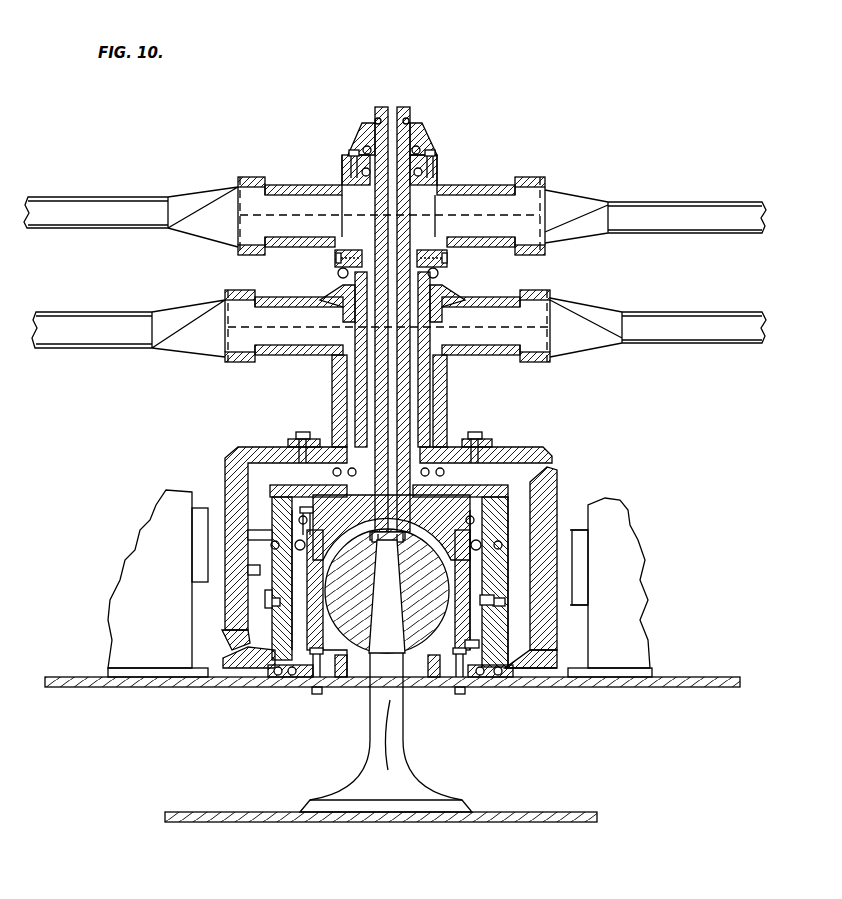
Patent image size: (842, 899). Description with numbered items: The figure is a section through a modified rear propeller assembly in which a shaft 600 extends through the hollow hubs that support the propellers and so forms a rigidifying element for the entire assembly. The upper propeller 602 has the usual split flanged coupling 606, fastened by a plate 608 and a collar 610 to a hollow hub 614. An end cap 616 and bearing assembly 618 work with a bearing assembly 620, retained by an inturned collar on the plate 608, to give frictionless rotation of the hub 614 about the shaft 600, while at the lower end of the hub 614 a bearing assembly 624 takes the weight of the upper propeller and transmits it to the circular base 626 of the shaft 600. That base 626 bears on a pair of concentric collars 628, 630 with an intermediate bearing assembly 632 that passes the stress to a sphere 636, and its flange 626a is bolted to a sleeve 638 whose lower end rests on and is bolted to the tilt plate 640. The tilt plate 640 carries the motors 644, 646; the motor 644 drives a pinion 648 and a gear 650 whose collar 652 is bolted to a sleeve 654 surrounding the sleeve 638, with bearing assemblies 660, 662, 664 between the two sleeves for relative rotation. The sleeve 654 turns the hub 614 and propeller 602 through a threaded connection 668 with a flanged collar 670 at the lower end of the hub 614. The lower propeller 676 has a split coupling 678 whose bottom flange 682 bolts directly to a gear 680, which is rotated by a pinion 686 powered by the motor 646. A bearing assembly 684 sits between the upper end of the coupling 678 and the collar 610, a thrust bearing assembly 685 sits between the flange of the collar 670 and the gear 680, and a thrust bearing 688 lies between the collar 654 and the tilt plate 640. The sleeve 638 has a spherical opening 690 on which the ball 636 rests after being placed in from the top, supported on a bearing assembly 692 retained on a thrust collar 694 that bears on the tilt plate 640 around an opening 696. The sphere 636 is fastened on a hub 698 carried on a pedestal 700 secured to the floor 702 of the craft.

The shaft 600 is at (402, 107).
The upper propeller 602 is at (566, 176).
The split flanged coupling 606 is at (500, 158).
The plate 608 is at (440, 165).
The collar 610 is at (450, 262).
The hollow hub 614 is at (340, 265).
The end cap 616 is at (420, 150).
The bearing assembly 618 is at (365, 146).
The bearing assembly 620 is at (345, 172).
The bearing assembly 624 is at (440, 440).
The circular base 626 is at (470, 488).
The flange 626a is at (336, 472).
The concentric collar 628 is at (540, 458).
The concentric collar 630 is at (512, 560).
The bearing assembly 632 is at (385, 530).
The sphere 636 is at (413, 690).
The sleeve 638 is at (290, 578).
The tilt plate 640 is at (565, 688).
The motor 644 is at (632, 644).
The motor 646 is at (165, 630).
The pinion 648 is at (572, 535).
The gear 650 is at (522, 680).
The collar 652 is at (500, 608).
The sleeve 654 is at (280, 572).
The bearing assembly 660 is at (508, 520).
The bearing assembly 662 is at (500, 545).
The bearing assembly 664 is at (500, 645).
The threaded connection 668 is at (298, 518).
The flanged collar 670 is at (296, 545).
The lower propeller 676 is at (655, 320).
The split coupling 678 is at (508, 300).
The gear 680 is at (300, 450).
The bottom flange 682 is at (330, 447).
The bearing assembly 684 is at (440, 274).
The thrust bearing assembly 685 is at (455, 470).
The pinion 686 is at (268, 584).
The thrust bearing 688 is at (280, 678).
The spherical opening 690 is at (430, 688).
The bearing assembly 692 is at (346, 663).
The thrust collar 694 is at (352, 686).
The opening 696 is at (405, 745).
The hub 698 is at (377, 690).
The pedestal 700 is at (370, 742).
The floor 702 is at (578, 812).